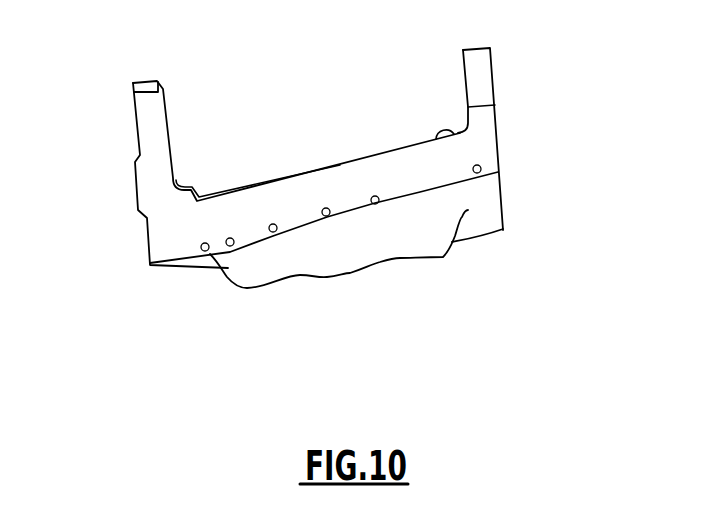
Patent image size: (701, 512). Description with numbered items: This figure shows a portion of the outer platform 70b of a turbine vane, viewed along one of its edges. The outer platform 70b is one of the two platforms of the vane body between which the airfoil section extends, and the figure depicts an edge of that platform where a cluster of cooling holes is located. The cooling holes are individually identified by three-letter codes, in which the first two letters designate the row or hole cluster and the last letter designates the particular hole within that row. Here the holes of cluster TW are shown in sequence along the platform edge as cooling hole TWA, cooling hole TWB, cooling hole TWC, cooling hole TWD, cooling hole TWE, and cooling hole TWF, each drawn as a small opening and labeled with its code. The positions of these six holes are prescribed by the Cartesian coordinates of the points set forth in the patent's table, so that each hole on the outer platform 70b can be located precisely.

The outer platform 70b is at (482, 152).
The cooling hole TWA is at (203, 251).
The cooling hole TWB is at (230, 246).
The cooling hole TWC is at (273, 232).
The cooling hole TWD is at (327, 216).
The cooling hole TWE is at (377, 204).
The cooling hole TWF is at (478, 173).